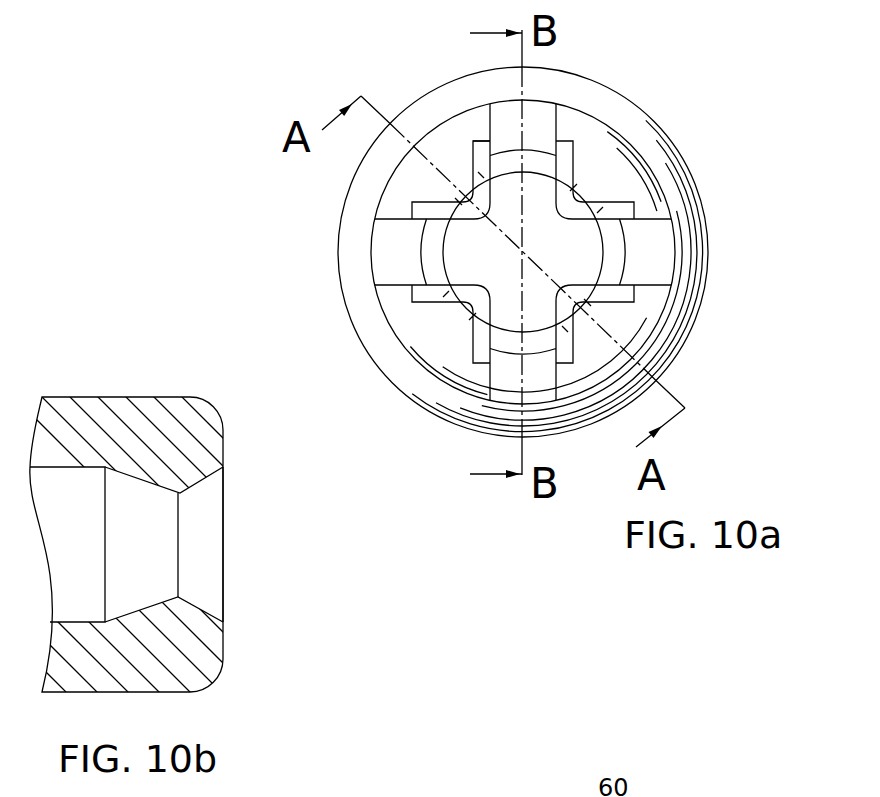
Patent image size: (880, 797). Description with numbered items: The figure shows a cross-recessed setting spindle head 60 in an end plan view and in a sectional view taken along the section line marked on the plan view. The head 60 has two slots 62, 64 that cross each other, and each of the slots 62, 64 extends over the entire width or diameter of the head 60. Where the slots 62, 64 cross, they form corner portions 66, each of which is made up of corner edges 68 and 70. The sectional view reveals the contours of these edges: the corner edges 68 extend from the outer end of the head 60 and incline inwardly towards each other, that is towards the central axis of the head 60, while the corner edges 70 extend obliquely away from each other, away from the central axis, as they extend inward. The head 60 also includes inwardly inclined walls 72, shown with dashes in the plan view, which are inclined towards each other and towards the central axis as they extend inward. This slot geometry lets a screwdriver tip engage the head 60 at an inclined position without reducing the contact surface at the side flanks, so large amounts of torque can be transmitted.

In FIG. 10A, the cross-recessed setting spindle head 60 is at (620, 132).
In FIG. 10B, the cross-recessed setting spindle head 60 is at (79, 396).
In FIG. 10A, the slot 62 is at (508, 392).
In FIG. 10A, the slot 64 is at (657, 242).
In FIG. 10A, the corner portion 66 is at (560, 222).
In FIG. 10B, the corner portion 66 is at (212, 484).
In FIG. 10A, the corner edge 68 is at (473, 188).
In FIG. 10B, the corner edge 68 is at (207, 613).
In FIG. 10B, the corner edge 70 is at (142, 609).
In FIG. 10A, the inwardly inclined wall 72 is at (576, 452).